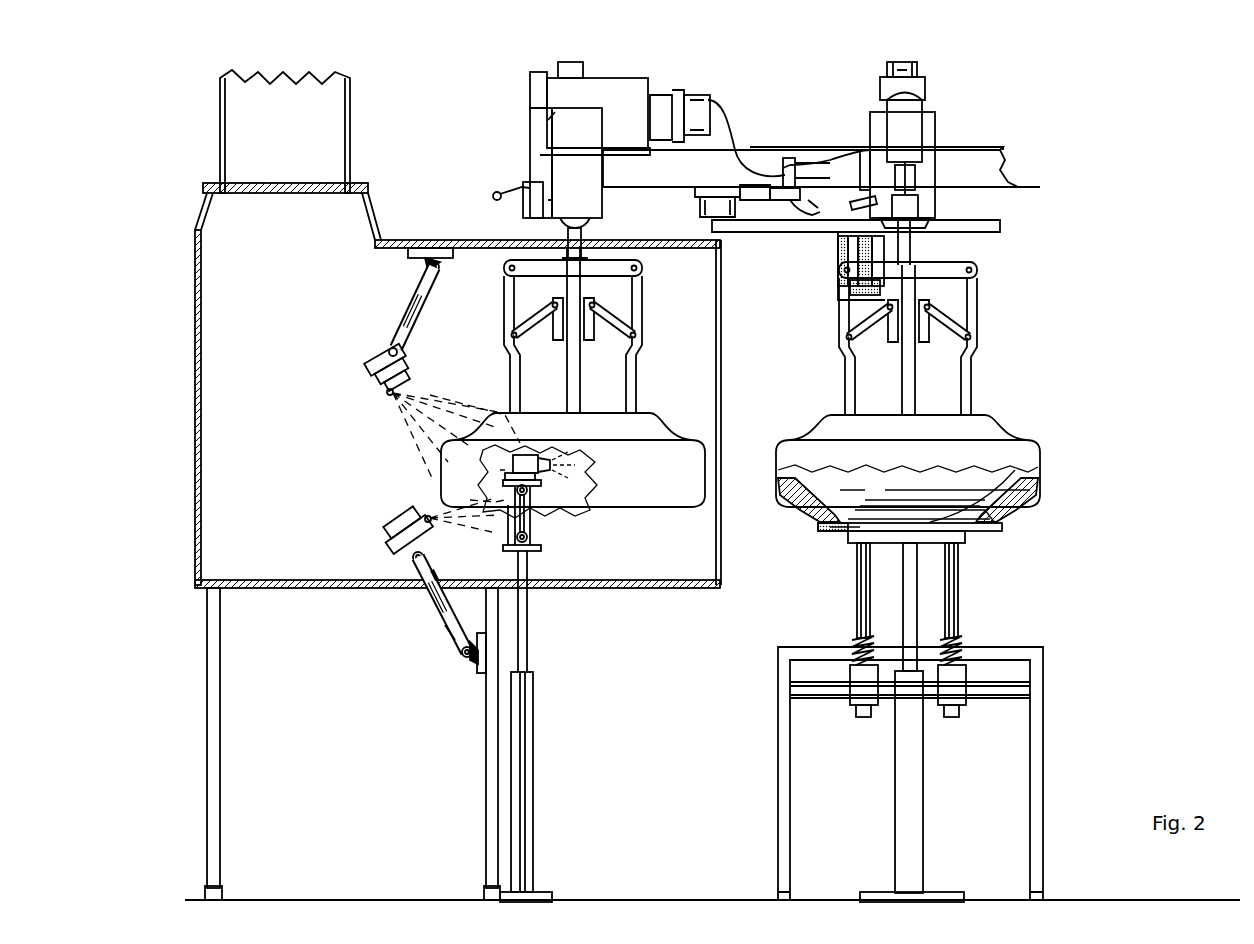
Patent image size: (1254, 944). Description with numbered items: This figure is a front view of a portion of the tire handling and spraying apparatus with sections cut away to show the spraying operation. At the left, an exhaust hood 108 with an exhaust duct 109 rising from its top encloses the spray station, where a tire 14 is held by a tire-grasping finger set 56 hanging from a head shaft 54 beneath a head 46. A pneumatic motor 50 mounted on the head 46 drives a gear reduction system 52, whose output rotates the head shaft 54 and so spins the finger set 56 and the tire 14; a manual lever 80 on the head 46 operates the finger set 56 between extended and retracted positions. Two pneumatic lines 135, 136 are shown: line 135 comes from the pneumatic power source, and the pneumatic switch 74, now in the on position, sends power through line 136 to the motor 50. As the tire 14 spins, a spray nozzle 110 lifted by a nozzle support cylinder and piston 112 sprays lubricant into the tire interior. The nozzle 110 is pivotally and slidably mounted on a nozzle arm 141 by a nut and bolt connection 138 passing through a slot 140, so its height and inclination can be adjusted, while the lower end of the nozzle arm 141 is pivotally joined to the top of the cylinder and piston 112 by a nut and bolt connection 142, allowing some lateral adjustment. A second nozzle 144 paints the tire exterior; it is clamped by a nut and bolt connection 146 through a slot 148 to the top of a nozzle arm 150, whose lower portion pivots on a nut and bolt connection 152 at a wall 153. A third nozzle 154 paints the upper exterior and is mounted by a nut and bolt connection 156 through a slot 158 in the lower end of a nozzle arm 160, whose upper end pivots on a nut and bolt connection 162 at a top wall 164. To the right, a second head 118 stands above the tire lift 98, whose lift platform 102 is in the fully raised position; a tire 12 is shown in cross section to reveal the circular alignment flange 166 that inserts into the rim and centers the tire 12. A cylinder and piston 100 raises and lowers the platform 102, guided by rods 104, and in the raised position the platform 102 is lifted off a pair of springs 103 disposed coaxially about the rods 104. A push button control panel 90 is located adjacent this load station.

The tire 12 is at (1030, 450).
The tire 14 is at (690, 440).
The head 46 is at (530, 108).
The pneumatic motor 50 is at (683, 92).
The gear reduction system 52 is at (630, 83).
The head shaft 54 is at (582, 230).
The tire-grasping finger set 56 is at (645, 322).
The pneumatic switch 74 is at (792, 160).
The manual lever 80 is at (497, 190).
The push button control panel 90 is at (830, 247).
The tire lift 98 is at (778, 755).
The cylinder and piston 100 is at (918, 750).
The lift platform 102 is at (985, 565).
The springs 103 is at (852, 642).
The rods 104 is at (860, 568).
The exhaust hood 108 is at (232, 489).
The exhaust duct 109 is at (352, 122).
The spray nozzle 110 is at (530, 462).
The nozzle support cylinder and piston 112 is at (530, 668).
The head 118 is at (940, 118).
The pneumatic line 135 is at (852, 140).
The pneumatic line 136 is at (733, 135).
The nut and bolt connection 138 is at (527, 490).
The slot 140 is at (533, 530).
The nozzle arm 141 is at (512, 525).
The nut and bolt connection 142 is at (540, 560).
The second nozzle 144 is at (410, 515).
The nut and bolt connection 146 is at (412, 568).
The slot 148 is at (425, 580).
The nozzle arm 150 is at (445, 620).
The nut and bolt connection 152 is at (465, 665).
The wall 153 is at (484, 712).
The third nozzle 154 is at (383, 393).
The nut and bolt connection 156 is at (373, 350).
The slot 158 is at (392, 338).
The nozzle arm 160 is at (416, 280).
The nut and bolt connection 162 is at (428, 267).
The top wall 164 is at (470, 255).
The alignment flange 166 is at (1030, 465).